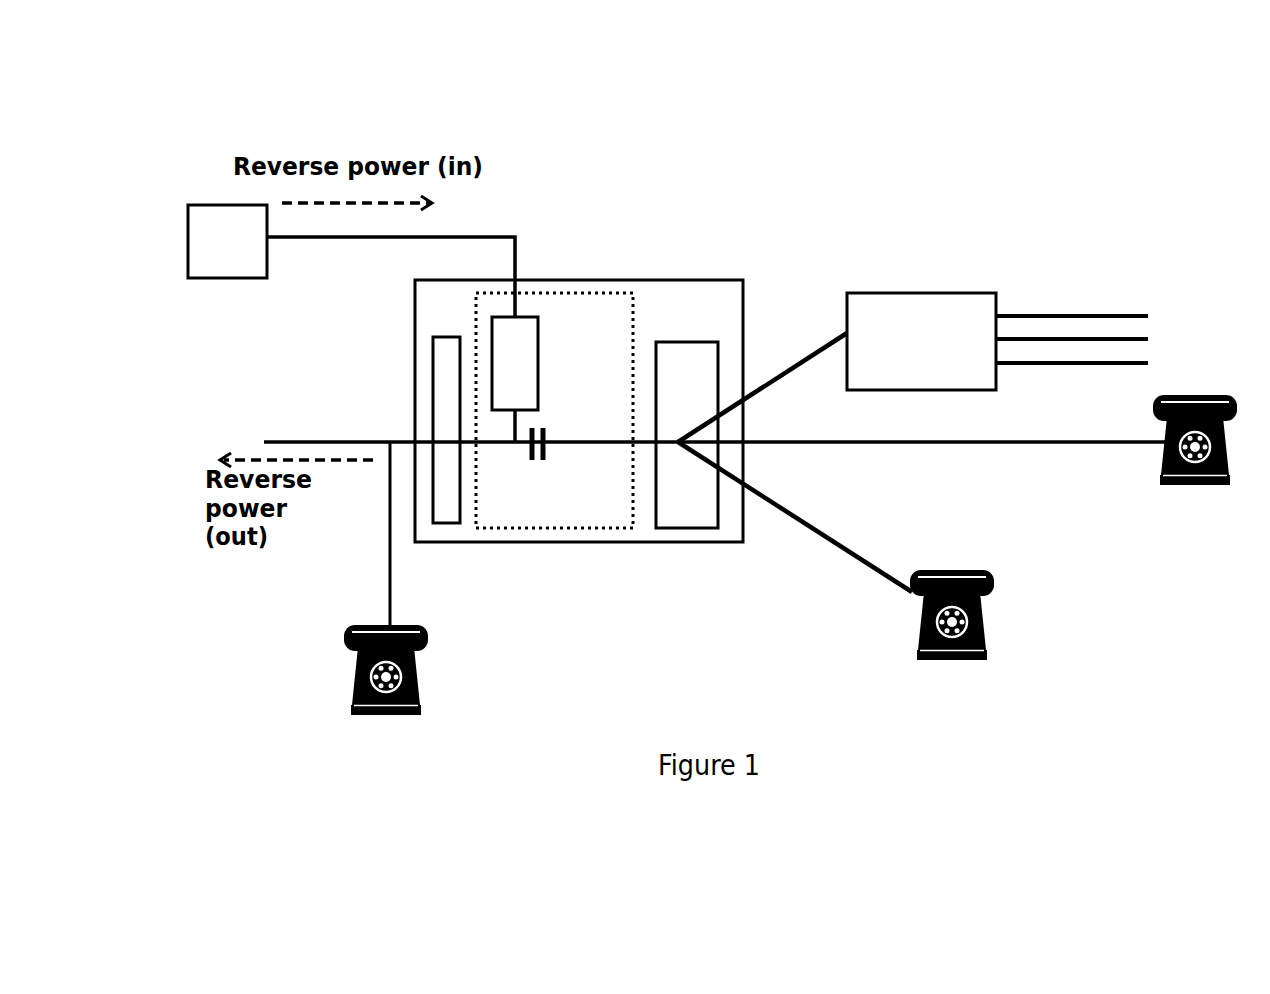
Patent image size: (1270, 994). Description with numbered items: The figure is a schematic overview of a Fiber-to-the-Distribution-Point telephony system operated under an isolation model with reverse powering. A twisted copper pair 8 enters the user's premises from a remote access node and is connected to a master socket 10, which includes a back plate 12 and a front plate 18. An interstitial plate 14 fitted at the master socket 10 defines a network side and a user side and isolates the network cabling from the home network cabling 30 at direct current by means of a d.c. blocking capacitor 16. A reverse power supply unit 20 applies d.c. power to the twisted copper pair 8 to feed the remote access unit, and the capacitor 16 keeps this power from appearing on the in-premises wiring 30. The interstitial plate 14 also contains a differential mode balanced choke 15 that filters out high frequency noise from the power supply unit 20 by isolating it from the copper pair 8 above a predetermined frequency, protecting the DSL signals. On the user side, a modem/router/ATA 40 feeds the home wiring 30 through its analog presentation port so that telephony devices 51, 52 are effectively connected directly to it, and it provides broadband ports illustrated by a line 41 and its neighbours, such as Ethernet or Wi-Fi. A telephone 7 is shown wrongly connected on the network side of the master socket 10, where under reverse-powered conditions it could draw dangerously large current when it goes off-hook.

The telephone 7 is at (345, 622).
The twisted copper pair 8 is at (350, 438).
The master socket 10 is at (580, 278).
The back plate 12 is at (432, 407).
The interstitial plate 14 is at (533, 530).
The differential mode balanced choke 15 is at (515, 379).
The d.c. blocking capacitor 16 is at (547, 425).
The front plate 18 is at (688, 532).
The power supply unit 20 is at (255, 283).
The home network cabling 30 is at (800, 365).
The modem/router/ATA 40 is at (927, 293).
The line 41 is at (1057, 300).
The telephony device 51 is at (993, 583).
The telephony device 52 is at (1213, 396).